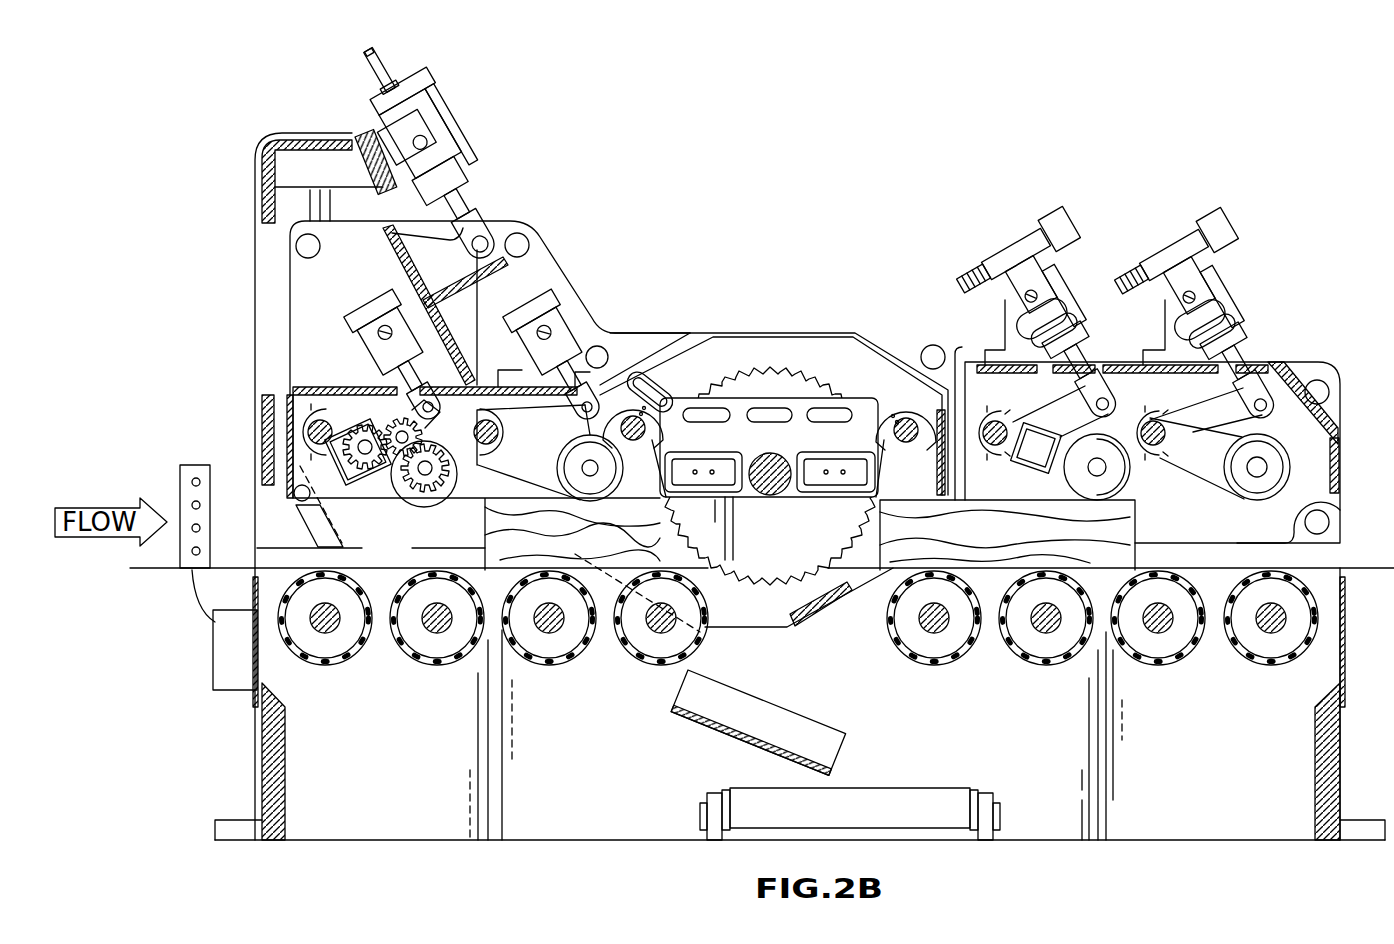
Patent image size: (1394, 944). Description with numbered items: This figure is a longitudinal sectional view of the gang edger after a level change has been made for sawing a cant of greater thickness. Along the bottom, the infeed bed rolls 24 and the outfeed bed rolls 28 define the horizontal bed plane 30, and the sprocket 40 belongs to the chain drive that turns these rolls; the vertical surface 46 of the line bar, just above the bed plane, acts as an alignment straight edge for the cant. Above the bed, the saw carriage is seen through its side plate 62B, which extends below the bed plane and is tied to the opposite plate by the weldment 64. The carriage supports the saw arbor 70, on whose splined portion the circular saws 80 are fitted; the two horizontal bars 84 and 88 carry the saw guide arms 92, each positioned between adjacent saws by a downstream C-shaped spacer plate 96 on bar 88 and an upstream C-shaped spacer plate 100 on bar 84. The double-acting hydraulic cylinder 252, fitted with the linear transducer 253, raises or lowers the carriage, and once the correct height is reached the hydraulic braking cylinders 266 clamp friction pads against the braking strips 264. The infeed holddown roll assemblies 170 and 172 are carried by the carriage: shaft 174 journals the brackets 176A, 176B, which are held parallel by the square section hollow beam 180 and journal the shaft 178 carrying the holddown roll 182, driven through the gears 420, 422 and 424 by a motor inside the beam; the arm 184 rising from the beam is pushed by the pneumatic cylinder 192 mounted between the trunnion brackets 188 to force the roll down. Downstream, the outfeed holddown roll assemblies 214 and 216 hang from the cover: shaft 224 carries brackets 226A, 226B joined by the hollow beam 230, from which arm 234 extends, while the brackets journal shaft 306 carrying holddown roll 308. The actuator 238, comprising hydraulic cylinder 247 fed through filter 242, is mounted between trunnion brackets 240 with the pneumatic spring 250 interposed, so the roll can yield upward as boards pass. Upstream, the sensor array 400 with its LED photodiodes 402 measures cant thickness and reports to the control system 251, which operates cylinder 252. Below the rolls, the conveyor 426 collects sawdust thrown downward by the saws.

The infeed bed rolls 24 is at (437, 665).
The outfeed bed rolls 28 is at (1046, 665).
The bed plane 30 is at (155, 570).
The sprocket 40 is at (1240, 543).
The vertical surface 46 is at (1342, 560).
The side plate 62B is at (298, 268).
The weldment 64 is at (424, 396).
The saw arbor 70 is at (772, 496).
The circular saws 80 is at (762, 567).
The horizontal bar 84 is at (632, 415).
The horizontal bar 88 is at (907, 447).
The saw guide arms 92 is at (773, 398).
The C-shaped spacer plate 96 is at (890, 420).
The C-shaped spacer plate 100 is at (670, 396).
The infeed holddown roll assembly 170 is at (305, 410).
The infeed holddown roll assembly 172 is at (584, 333).
The shaft 174 is at (305, 432).
The bracket 176A is at (352, 422).
The bracket 176B is at (418, 490).
The shaft 178 is at (436, 478).
The square section hollow beam 180 is at (371, 549).
The holddown roll 182 is at (485, 518).
The arm 184 is at (380, 400).
The trunnion brackets 188 is at (352, 342).
The pneumatic cylinder 192 is at (556, 307).
The outfeed holddown roll assembly 214 is at (1003, 244).
The outfeed holddown roll assembly 216 is at (1163, 244).
The shaft 224 is at (995, 420).
The bracket 226A is at (1115, 505).
The bracket 226B is at (990, 528).
The square section hollow beam 230 is at (1012, 458).
The arm 234 is at (1045, 427).
The actuator 238 is at (1010, 300).
The trunnion brackets 240 is at (968, 362).
The filter 242 is at (965, 277).
The double-acting hydraulic cylinder 247 is at (1175, 337).
The pneumatic spring 250 is at (1068, 302).
The control system 251 is at (213, 666).
The double-acting hydraulic cylinder 252 is at (450, 172).
The linear transducer 253 is at (365, 74).
The braking strips 264 is at (305, 518).
The hydraulic braking cylinders 266 is at (300, 499).
The shaft 306 is at (1108, 468).
The holddown roll 308 is at (1140, 430).
The sensor array 400 is at (195, 462).
The LED photodiodes 402 is at (192, 505).
The gear 420 is at (488, 468).
The gear 422 is at (470, 416).
The gear 424 is at (352, 472).
The conveyor 426 is at (900, 788).